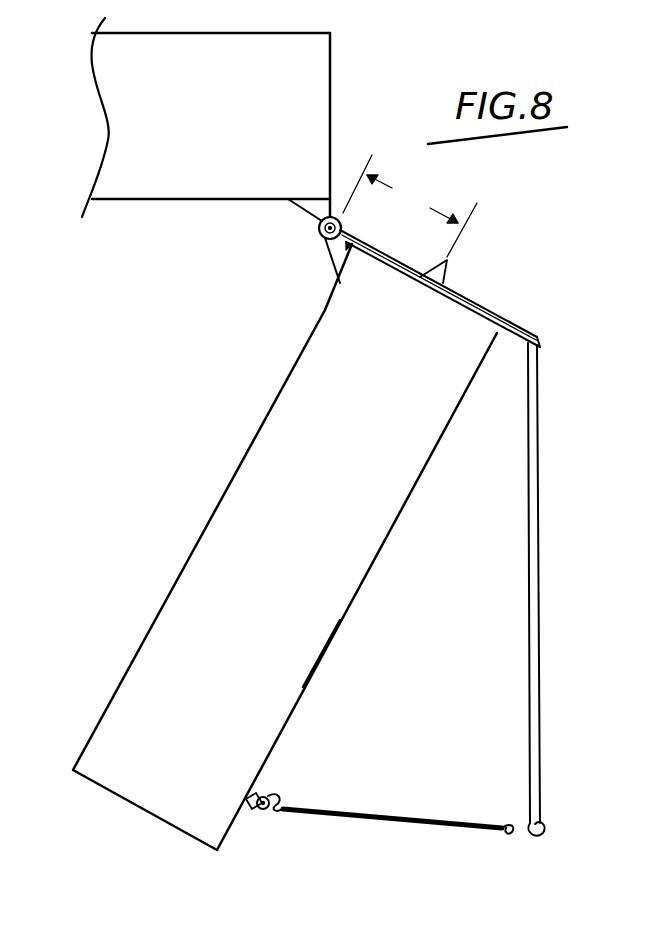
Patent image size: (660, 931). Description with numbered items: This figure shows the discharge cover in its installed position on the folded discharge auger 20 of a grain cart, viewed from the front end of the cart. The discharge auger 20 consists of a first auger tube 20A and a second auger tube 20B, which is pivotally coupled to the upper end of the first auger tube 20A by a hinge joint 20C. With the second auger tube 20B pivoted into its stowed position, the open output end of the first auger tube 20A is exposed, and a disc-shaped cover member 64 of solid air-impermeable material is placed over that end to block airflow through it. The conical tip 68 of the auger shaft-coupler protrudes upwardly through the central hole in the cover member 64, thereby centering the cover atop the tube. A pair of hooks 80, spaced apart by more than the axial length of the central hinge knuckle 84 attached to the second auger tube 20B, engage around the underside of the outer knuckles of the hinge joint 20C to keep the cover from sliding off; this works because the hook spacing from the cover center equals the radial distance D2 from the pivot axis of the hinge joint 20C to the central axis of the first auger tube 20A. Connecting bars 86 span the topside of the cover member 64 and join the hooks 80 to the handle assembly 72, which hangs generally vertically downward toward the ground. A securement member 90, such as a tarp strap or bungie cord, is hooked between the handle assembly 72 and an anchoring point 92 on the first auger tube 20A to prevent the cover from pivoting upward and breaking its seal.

The discharge auger 20 is at (220, 435).
The first auger tube 20A is at (322, 640).
The second auger tube 20B is at (195, 182).
The hinge joint 20C is at (343, 227).
The cover member 64 is at (465, 310).
The conical tip 68 is at (447, 260).
The handle assembly 72 is at (550, 547).
The hooks 80 is at (313, 240).
The central hinge knuckle 84 is at (308, 210).
The connecting bar 86 is at (460, 297).
The securement member 90 is at (387, 812).
The anchoring point 92 is at (266, 815).
The radial distance D2 is at (410, 206).